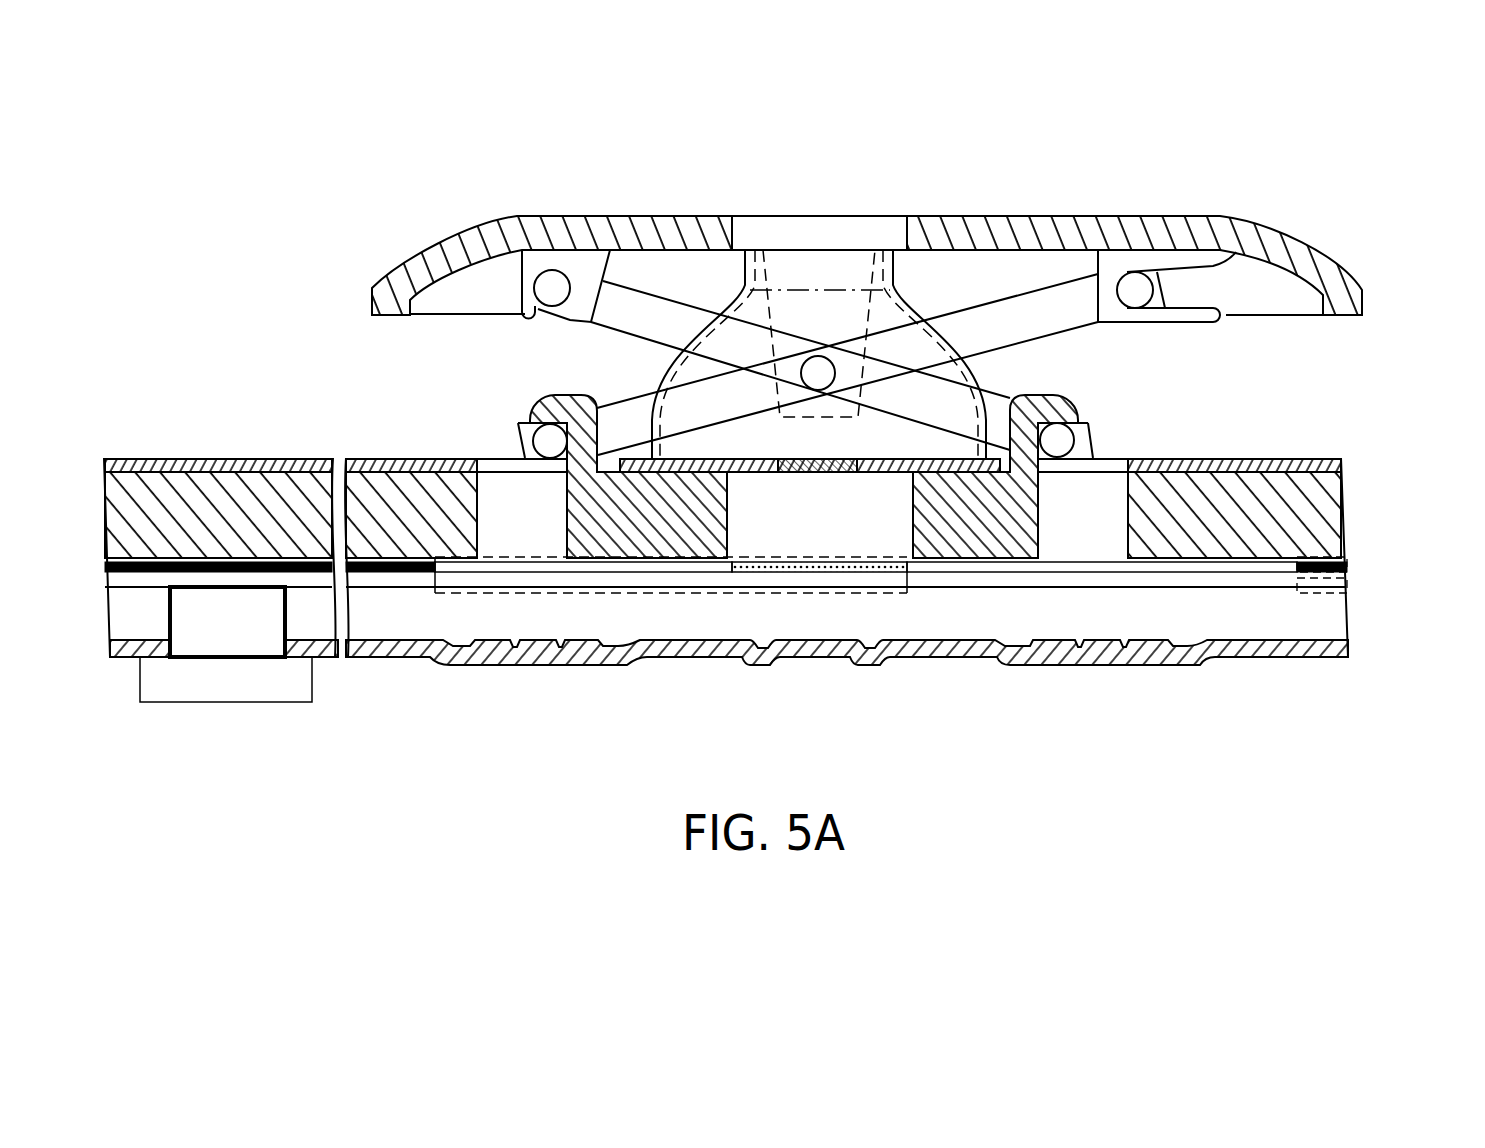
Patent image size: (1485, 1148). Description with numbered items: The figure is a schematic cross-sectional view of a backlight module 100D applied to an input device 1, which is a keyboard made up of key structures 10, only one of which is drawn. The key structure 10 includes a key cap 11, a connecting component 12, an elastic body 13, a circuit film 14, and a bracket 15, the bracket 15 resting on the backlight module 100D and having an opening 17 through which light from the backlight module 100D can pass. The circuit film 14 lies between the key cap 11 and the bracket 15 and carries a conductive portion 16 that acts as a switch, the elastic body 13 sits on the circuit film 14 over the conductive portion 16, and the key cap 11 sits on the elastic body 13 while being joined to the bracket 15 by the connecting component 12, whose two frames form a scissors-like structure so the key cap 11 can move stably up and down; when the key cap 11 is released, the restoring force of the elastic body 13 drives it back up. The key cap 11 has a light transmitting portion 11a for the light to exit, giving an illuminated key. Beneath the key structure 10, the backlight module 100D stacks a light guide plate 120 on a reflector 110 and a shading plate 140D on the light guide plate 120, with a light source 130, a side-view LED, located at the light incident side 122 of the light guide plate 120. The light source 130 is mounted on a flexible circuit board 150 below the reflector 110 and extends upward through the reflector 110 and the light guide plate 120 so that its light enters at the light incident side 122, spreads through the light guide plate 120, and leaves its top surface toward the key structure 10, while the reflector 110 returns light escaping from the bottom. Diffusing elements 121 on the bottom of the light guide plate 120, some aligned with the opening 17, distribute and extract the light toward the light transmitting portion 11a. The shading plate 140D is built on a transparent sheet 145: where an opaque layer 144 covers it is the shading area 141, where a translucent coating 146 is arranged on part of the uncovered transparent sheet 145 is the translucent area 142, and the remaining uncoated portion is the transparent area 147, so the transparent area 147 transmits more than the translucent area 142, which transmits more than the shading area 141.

The input device 1 is at (1322, 215).
The key structure 10 is at (292, 285).
The key cap 11 is at (392, 295).
The light transmitting portion 11a is at (825, 232).
The connecting component 12 is at (623, 313).
The elastic body 13 is at (723, 370).
The circuit film 14 is at (425, 459).
The bracket 15 is at (385, 487).
The conductive portion 16 is at (868, 447).
The opening 17 is at (1097, 497).
The backlight module 100D is at (1382, 671).
The reflector 110 is at (1337, 648).
The light guide plate 120 is at (1335, 615).
The diffusing elements 121 is at (558, 648).
The light incident side 122 is at (284, 604).
The light source 130 is at (230, 632).
The shading plate 140D is at (1403, 518).
The shading area 141 is at (1310, 597).
The translucent area 142 is at (822, 597).
The opaque layer 144 is at (1345, 566).
The transparent sheet 145 is at (1340, 585).
The translucent coating 146 is at (870, 560).
The transparent area 147 is at (662, 597).
The flexible circuit board 150 is at (175, 685).